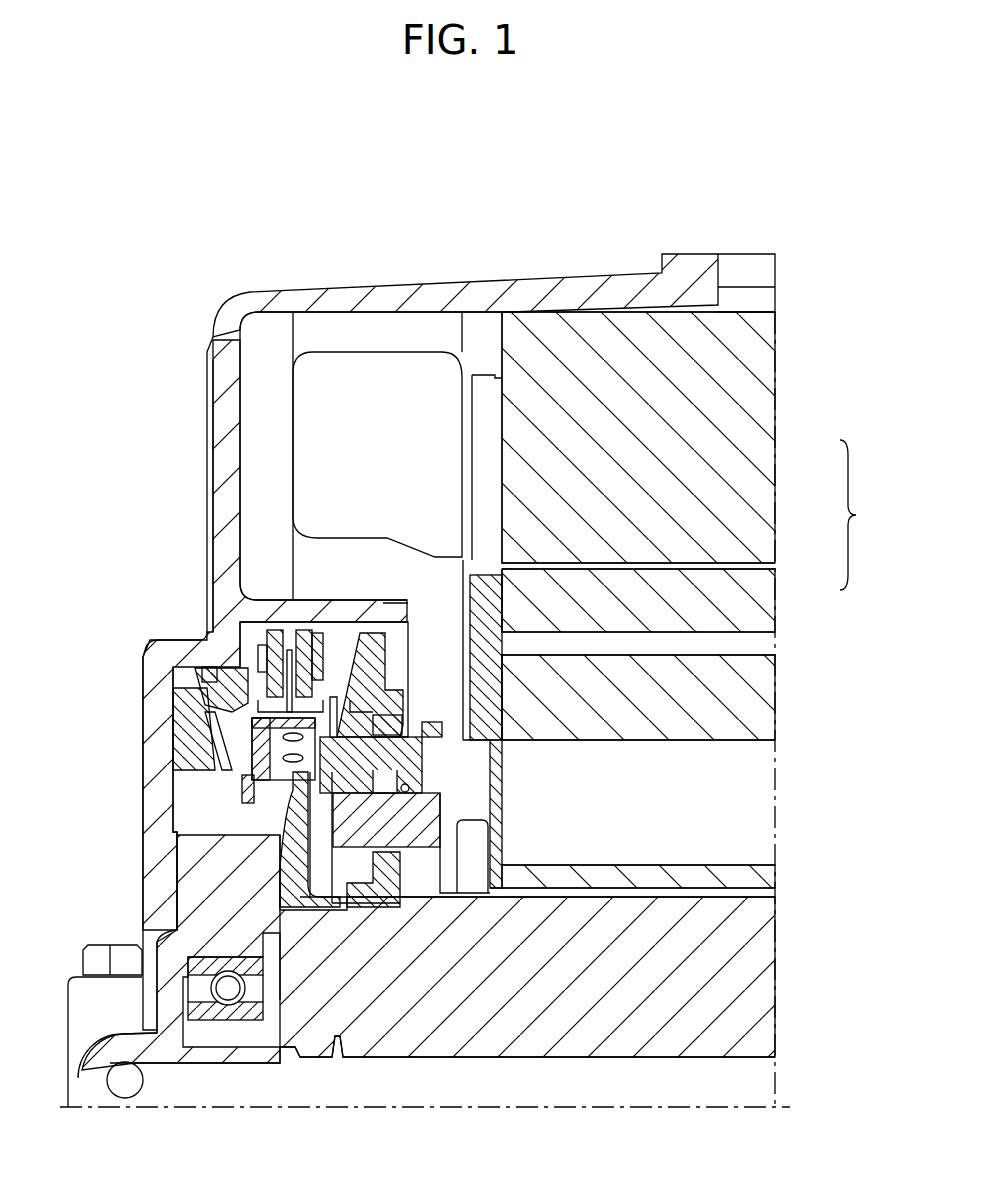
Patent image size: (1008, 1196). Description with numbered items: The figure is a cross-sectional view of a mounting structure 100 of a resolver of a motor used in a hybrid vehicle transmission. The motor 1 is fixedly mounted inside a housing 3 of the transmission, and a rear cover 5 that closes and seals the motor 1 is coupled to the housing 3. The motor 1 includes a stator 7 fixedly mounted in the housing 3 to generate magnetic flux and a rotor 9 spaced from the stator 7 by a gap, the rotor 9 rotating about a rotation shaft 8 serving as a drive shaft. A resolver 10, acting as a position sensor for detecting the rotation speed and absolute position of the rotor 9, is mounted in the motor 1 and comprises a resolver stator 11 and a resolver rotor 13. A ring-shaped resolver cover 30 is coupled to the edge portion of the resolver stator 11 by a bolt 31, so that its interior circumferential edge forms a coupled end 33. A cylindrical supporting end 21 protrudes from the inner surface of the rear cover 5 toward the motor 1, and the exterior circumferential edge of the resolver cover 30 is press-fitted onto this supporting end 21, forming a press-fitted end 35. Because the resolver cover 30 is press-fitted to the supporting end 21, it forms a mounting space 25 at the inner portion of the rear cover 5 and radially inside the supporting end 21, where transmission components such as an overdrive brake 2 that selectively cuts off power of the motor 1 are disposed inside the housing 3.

The mounting structure 100 is at (446, 213).
The motor 1 is at (857, 515).
The overdrive brake 2 is at (246, 732).
The housing 3 is at (745, 298).
The rear cover 5 is at (141, 655).
The stator 7 is at (781, 460).
The rotation shaft 8 is at (490, 1045).
The rotor 9 is at (781, 588).
The resolver 10 is at (440, 793).
The resolver stator 11 is at (483, 832).
The resolver rotor 13 is at (387, 905).
The supporting end 21 is at (372, 617).
The mounting space 25 is at (262, 778).
The resolver cover 30 is at (392, 657).
The bolt 31 is at (412, 783).
The coupled end 33 is at (288, 808).
The press-fitted end 35 is at (355, 622).